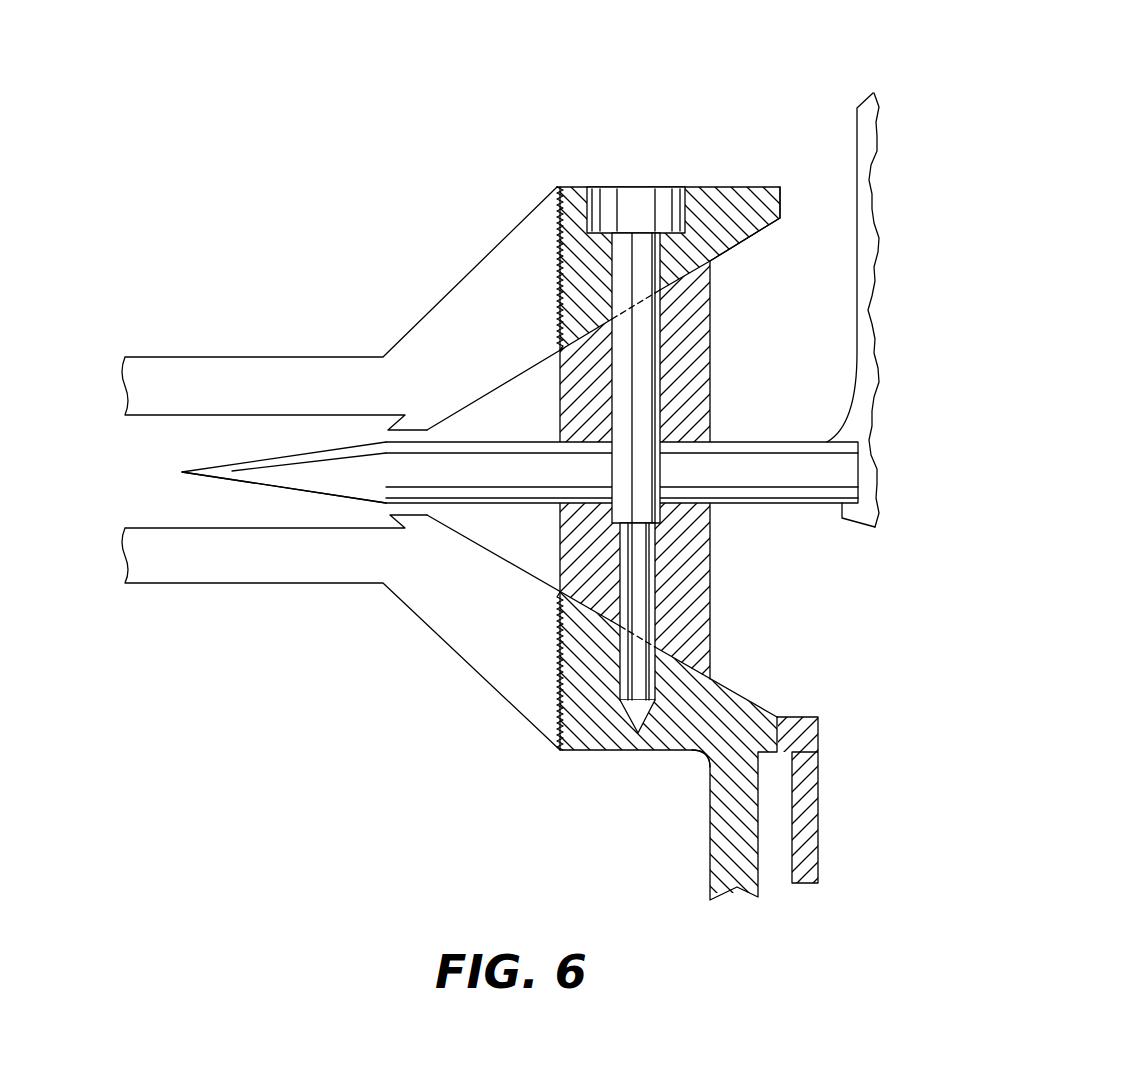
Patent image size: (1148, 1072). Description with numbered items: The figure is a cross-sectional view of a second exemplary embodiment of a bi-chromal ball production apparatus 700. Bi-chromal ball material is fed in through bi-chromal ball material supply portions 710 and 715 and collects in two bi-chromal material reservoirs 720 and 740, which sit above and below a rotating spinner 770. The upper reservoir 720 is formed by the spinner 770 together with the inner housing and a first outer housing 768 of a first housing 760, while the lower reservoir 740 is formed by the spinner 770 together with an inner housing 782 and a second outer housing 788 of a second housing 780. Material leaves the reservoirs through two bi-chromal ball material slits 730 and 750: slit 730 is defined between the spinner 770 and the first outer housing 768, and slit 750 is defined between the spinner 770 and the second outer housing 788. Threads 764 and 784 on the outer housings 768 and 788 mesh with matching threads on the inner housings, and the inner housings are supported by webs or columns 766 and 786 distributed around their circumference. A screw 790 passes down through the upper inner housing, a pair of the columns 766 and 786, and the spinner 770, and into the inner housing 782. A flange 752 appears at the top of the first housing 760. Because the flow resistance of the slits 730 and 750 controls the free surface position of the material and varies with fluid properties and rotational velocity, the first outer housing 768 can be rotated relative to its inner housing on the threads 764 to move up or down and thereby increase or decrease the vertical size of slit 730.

The bi-chromal ball production apparatus 700 is at (288, 103).
The bi-chromal ball material supply portion 710 is at (811, 233).
The bi-chromal ball material supply portion 715 is at (806, 805).
The bi-chromal material reservoir 720 is at (512, 418).
The bi-chromal ball material slit 730 is at (385, 434).
The bi-chromal material reservoir 740 is at (512, 523).
The bi-chromal ball material slit 750 is at (386, 508).
The flange 752 is at (716, 186).
The first housing 760 is at (553, 180).
The threads 764 is at (547, 218).
The webs or columns 766 is at (575, 361).
The first outer housing 768 is at (397, 343).
The spinner 770 is at (410, 452).
The second housing 780 is at (572, 760).
The inner housing 782 is at (707, 765).
The threads 784 is at (552, 656).
The webs or columns 786 is at (575, 566).
The second outer housing 788 is at (437, 610).
The screw 790 is at (637, 185).